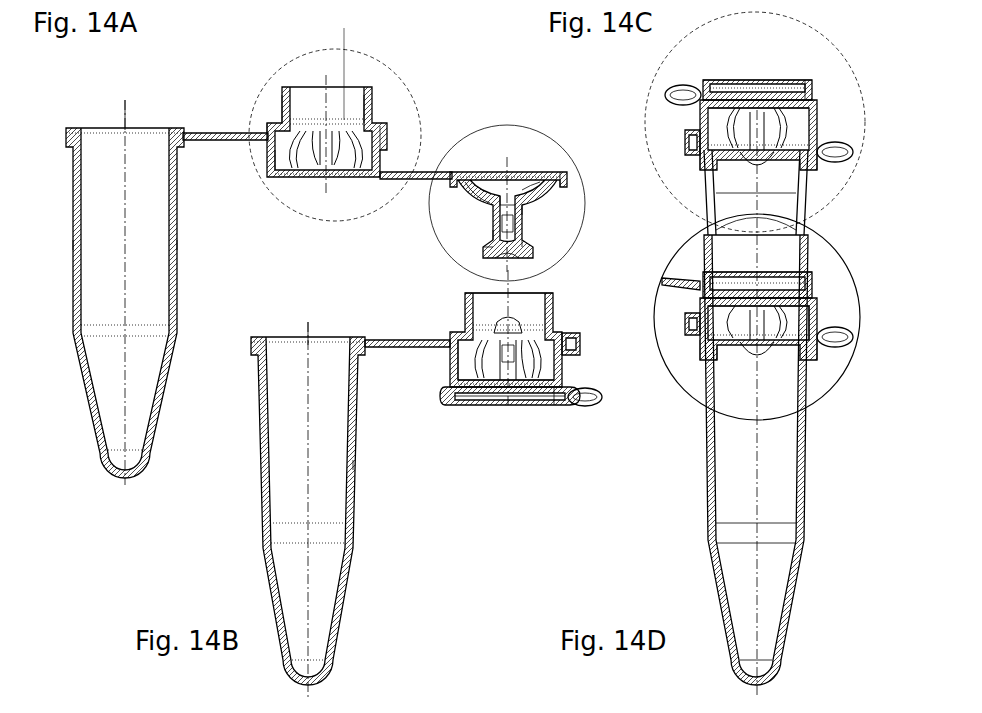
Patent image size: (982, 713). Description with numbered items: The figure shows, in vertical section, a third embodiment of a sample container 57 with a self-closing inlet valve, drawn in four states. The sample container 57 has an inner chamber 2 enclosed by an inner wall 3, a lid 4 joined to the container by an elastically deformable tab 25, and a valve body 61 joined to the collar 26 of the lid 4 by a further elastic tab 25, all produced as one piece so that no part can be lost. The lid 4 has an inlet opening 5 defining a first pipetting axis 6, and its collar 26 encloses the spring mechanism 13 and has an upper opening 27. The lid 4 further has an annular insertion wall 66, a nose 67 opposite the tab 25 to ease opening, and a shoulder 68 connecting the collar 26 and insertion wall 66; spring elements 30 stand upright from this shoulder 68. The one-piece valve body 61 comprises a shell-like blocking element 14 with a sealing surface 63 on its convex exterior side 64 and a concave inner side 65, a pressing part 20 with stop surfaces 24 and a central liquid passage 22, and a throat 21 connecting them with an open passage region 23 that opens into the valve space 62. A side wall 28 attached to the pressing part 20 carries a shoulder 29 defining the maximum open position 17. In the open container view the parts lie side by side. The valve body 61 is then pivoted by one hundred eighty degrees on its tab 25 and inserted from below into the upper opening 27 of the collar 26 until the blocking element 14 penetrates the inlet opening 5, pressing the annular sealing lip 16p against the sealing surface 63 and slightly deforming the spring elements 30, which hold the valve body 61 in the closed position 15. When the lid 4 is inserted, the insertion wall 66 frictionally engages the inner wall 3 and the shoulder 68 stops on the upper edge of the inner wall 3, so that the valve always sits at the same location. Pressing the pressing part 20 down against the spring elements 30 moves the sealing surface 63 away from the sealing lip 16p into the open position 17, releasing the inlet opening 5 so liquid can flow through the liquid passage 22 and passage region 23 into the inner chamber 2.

In FIG. 14A, the inner chamber 2 is at (92, 281).
In FIG. 14B, the inner chamber 2 is at (287, 501).
In FIG. 14D, the inner chamber 2 is at (737, 501).
In FIG. 14A, the inner wall 3 is at (168, 245).
In FIG. 14B, the inner wall 3 is at (355, 465).
In FIG. 14D, the inner wall 3 is at (704, 467).
In FIG. 14A, the lid 4 is at (397, 60).
In FIG. 14B, the lid 4 is at (510, 452).
In FIG. 14C, the lid 4 is at (756, 90).
In FIG. 14D, the lid 4 is at (757, 284).
In FIG. 14A, the inlet opening 5 is at (312, 46).
In FIG. 14A, the first pipetting axis 6 is at (122, 100).
In FIG. 14B, the first pipetting axis 6 is at (305, 325).
In FIG. 14C, the first pipetting axis 6 is at (757, 182).
In FIG. 14D, the first pipetting axis 6 is at (757, 442).
In FIG. 14A, the spring mechanism 13 is at (340, 192).
In FIG. 14B, the spring mechanism 13 is at (480, 398).
In FIG. 14A, the blocking element 14 is at (484, 248).
In FIG. 14B, the blocking element 14 is at (490, 330).
In FIG. 14C, the blocking element 14 is at (806, 170).
In FIG. 14D, the blocking element 14 is at (780, 400).
In FIG. 14C, the closed position 15 is at (645, 52).
In FIG. 14A, the sealing lip 16p is at (270, 120).
In FIG. 14B, the sealing lip 16p is at (545, 330).
In FIG. 14C, the sealing lip 16p is at (820, 165).
In FIG. 14D, the sealing lip 16p is at (700, 340).
In FIG. 14A, the open position 17 is at (628, 246).
In FIG. 14A, the pressing part 20 is at (540, 195).
In FIG. 14B, the pressing part 20 is at (460, 388).
In FIG. 14C, the pressing part 20 is at (790, 90).
In FIG. 14D, the pressing part 20 is at (735, 282).
In FIG. 14A, the throat 21 is at (520, 220).
In FIG. 14B, the throat 21 is at (560, 365).
In FIG. 14C, the throat 21 is at (715, 130).
In FIG. 14A, the liquid passage 22 is at (515, 185).
In FIG. 14B, the liquid passage 22 is at (505, 378).
In FIG. 14C, the liquid passage 22 is at (745, 100).
In FIG. 14A, the open passage region 23 is at (520, 200).
In FIG. 14B, the open passage region 23 is at (580, 346).
In FIG. 14C, the open passage region 23 is at (689, 146).
In FIG. 14A, the stop surfaces 24 is at (476, 206).
In FIG. 14B, the stop surfaces 24 is at (470, 381).
In FIG. 14A, the elastically deformable tab 25 is at (220, 133).
In FIG. 14B, the elastically deformable tab 25 is at (395, 340).
In FIG. 14C, the elastically deformable tab 25 is at (668, 92).
In FIG. 14D, the elastically deformable tab 25 is at (668, 282).
In FIG. 14A, the collar 26 is at (270, 160).
In FIG. 14D, the collar 26 is at (812, 330).
In FIG. 14A, the upper opening 27 is at (280, 176).
In FIG. 14A, the side wall 28 is at (565, 180).
In FIG. 14B, the side wall 28 is at (448, 400).
In FIG. 14C, the side wall 28 is at (810, 82).
In FIG. 14A, the shoulder 29 is at (530, 190).
In FIG. 14B, the shoulder 29 is at (560, 402).
In FIG. 14C, the shoulder 29 is at (660, 68).
In FIG. 14A, the spring elements 30 is at (317, 192).
In FIG. 14B, the spring elements 30 is at (535, 362).
In FIG. 14C, the spring elements 30 is at (795, 120).
In FIG. 14D, the spring elements 30 is at (800, 320).
In FIG. 14A, the sample container 57 is at (74, 461).
In FIG. 14B, the sample container 57 is at (400, 530).
In FIG. 14D, the sample container 57 is at (655, 530).
In FIG. 14A, the valve body 61 is at (496, 123).
In FIG. 14C, the valve space 62 is at (700, 135).
In FIG. 14D, the valve space 62 is at (690, 320).
In FIG. 14A, the sealing surface 63 is at (483, 240).
In FIG. 14D, the sealing surface 63 is at (700, 352).
In FIG. 14A, the convex exterior side 64 is at (527, 240).
In FIG. 14A, the concave inner side 65 is at (486, 256).
In FIG. 14B, the concave inner side 65 is at (530, 316).
In FIG. 14D, the concave inner side 65 is at (738, 362).
In FIG. 14A, the annular insertion wall 66 is at (288, 100).
In FIG. 14D, the annular insertion wall 66 is at (730, 350).
In FIG. 14A, the nose 67 is at (385, 130).
In FIG. 14C, the nose 67 is at (700, 160).
In FIG. 14A, the shoulder 68 is at (268, 128).
In FIG. 14D, the shoulder 68 is at (815, 358).